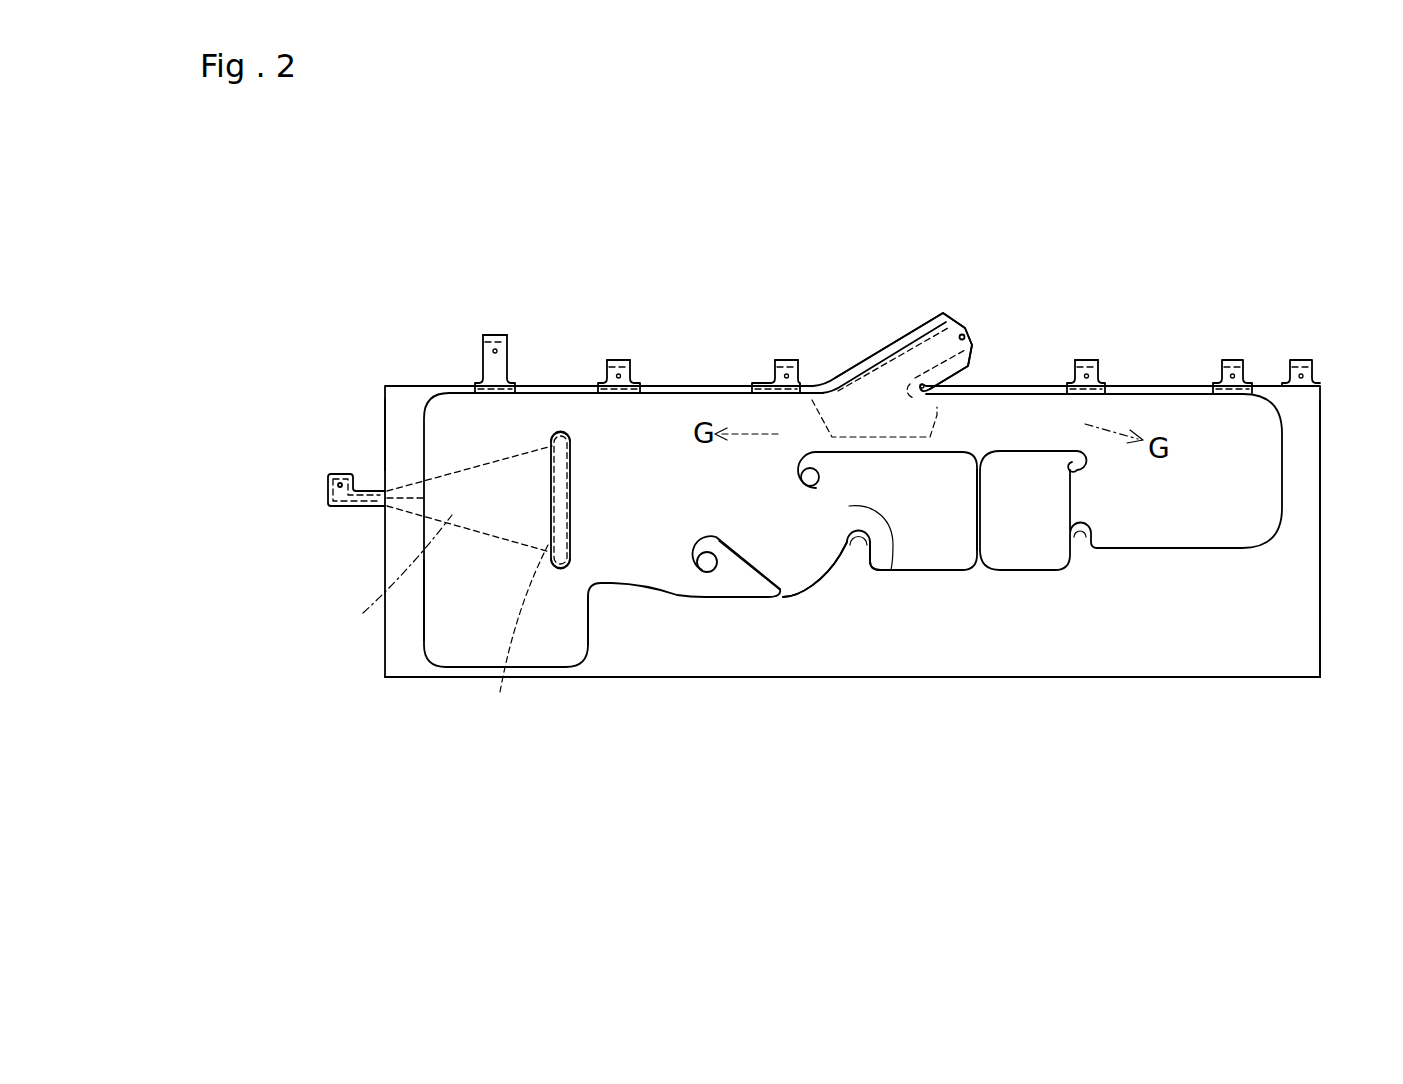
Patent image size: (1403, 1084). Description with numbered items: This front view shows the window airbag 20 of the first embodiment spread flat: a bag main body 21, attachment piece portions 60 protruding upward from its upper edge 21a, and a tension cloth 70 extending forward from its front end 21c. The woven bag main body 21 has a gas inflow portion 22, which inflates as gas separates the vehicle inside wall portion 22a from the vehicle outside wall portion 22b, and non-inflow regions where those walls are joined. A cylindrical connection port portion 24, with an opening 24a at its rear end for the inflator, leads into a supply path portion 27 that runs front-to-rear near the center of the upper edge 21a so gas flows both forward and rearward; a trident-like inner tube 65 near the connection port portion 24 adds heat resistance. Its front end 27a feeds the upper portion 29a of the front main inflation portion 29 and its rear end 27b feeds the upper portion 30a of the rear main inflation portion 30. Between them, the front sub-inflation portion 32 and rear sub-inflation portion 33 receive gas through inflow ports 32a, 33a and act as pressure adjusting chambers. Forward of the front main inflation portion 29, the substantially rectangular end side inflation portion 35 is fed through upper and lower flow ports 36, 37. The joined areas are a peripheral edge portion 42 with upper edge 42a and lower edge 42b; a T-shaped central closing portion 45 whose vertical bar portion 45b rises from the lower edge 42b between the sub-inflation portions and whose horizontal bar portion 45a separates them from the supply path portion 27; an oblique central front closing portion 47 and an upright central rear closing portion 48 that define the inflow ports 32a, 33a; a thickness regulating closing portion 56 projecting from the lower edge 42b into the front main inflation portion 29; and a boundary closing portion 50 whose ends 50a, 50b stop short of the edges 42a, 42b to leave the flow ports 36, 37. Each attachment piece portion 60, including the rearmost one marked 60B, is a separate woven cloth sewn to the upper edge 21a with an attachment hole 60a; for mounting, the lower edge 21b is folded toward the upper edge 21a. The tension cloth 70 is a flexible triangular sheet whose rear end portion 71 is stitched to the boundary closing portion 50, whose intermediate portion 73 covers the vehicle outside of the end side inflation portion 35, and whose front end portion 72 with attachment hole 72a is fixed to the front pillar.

The airbag 20 is at (422, 257).
The bag main body 21 is at (814, 682).
The upper edge 21a is at (676, 425).
The lower edge 21b is at (693, 657).
The front end 21c is at (402, 437).
The gas inflow portion 22 is at (469, 652).
The vehicle inside wall portion 22a is at (440, 605).
The vehicle outside wall portion 22b is at (437, 638).
The connection port portion 24 is at (932, 320).
The opening 24a is at (957, 312).
The supply path portion 27 is at (992, 418).
The front end of supply path portion 27a is at (798, 436).
The rear end of supply path portion 27b is at (1073, 432).
The front main inflation portion 29 is at (648, 575).
The upper portion of front main inflation portion 29a is at (666, 420).
The rear main inflation portion 30 is at (1196, 534).
The upper portion of rear main inflation portion 30a is at (1156, 418).
The front sub-inflation portion 32 is at (917, 533).
The inflow port 32a is at (889, 570).
The rear sub-inflation portion 33 is at (1028, 537).
The inflow port 33a is at (1057, 510).
The end side inflation portion 35 is at (460, 437).
The upper flow port 36 is at (557, 411).
The lower flow port 37 is at (580, 582).
The peripheral edge portion 42 is at (1267, 650).
The upper edge of peripheral edge portion 42a is at (737, 382).
The lower edge of peripheral edge portion 42b is at (1117, 656).
The central closing portion 45 is at (968, 560).
The horizontal bar portion 45a is at (888, 456).
The vertical bar portion 45b is at (984, 507).
The central front closing portion 47 is at (808, 594).
The central rear closing portion 48 is at (1090, 524).
The boundary closing portion 50 is at (589, 484).
The upper end of boundary closing portion 50a is at (552, 436).
The lower end of boundary closing portion 50b is at (585, 547).
The thickness regulating closing portion 56 is at (722, 534).
The attachment piece portion 60 is at (590, 370).
The attachment hole 60a is at (496, 335).
The end terminal 60B is at (1313, 368).
The inner tube 65 is at (900, 367).
The tension cloth 70 is at (367, 524).
The rear end portion 71 is at (519, 636).
The front end portion 72 is at (330, 476).
The attachment hole 72a is at (340, 480).
The intermediate portion 73 is at (391, 575).